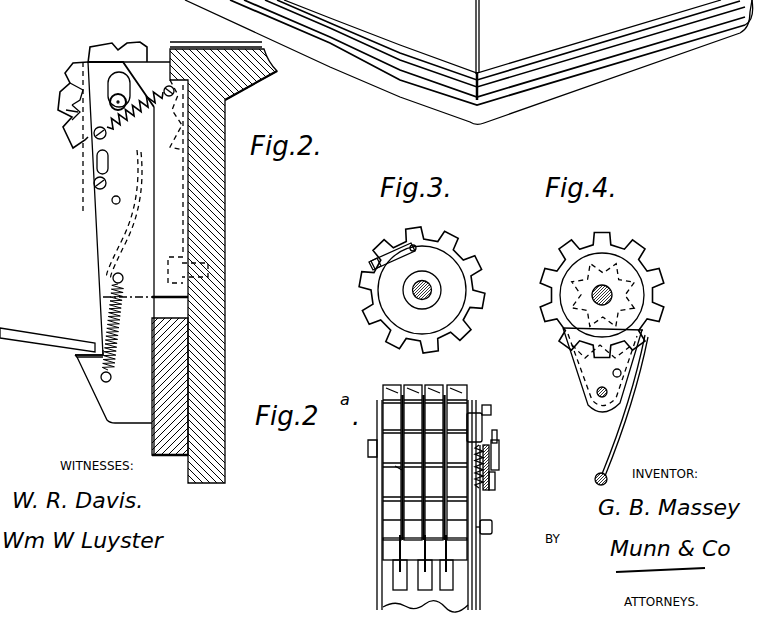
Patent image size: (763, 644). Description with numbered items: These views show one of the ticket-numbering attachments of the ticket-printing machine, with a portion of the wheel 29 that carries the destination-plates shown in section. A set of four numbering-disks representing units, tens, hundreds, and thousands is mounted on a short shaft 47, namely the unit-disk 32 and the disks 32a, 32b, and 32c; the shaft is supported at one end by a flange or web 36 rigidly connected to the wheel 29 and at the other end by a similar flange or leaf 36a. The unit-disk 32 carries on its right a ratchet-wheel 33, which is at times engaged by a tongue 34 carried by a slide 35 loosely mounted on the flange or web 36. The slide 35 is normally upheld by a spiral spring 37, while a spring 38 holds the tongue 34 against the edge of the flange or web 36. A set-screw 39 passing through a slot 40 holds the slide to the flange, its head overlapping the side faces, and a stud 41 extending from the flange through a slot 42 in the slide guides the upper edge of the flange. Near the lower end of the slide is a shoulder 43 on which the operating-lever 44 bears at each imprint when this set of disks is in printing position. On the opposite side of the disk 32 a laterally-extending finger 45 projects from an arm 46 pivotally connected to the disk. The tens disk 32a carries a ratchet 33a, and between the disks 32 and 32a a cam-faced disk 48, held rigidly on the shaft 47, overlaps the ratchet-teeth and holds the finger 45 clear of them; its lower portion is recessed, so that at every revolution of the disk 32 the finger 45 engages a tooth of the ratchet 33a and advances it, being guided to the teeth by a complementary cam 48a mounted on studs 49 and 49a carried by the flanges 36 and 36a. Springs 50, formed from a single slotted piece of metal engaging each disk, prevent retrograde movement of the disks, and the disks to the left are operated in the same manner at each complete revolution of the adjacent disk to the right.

In FIG. 2, the wheel 29 is at (222, 243).
In FIG. 2, the unit-disk 32 is at (135, 52).
In FIG. 3, the unit-disk 32 is at (470, 262).
In FIG. 2A, the unit-disk 32 is at (463, 391).
In FIG. 4, the tens printing-disk 32a is at (622, 246).
In FIG. 2A, the tens printing-disk 32a is at (437, 391).
In FIG. 2A, the numbering-disk 32b is at (414, 391).
In FIG. 2A, the numbering-disk 32c is at (393, 390).
In FIG. 2, the ratchet-wheel 33 is at (75, 108).
In FIG. 2A, the ratchet-wheel 33 is at (400, 469).
In FIG. 4, the ratchet 33a is at (602, 361).
In FIG. 2, the tongue 34 is at (80, 90).
In FIG. 2A, the tongue 34 is at (484, 428).
In FIG. 2, the slide 35 is at (143, 188).
In FIG. 2, the flange or web 36 is at (180, 270).
In FIG. 2A, the flange or web 36 is at (472, 563).
In FIG. 2A, the flange or leaf 36a is at (378, 546).
In FIG. 2, the spiral spring 37 is at (113, 342).
In FIG. 2, the spring 38 is at (124, 110).
In FIG. 2A, the spring 38 is at (492, 466).
In FIG. 2, the set-screw 39 is at (113, 165).
In FIG. 2A, the set-screw 39 is at (492, 528).
In FIG. 2, the slot 40 is at (97, 160).
In FIG. 2, the stud 41 is at (115, 100).
In FIG. 2, the slot 42 is at (130, 100).
In FIG. 2, the shoulder 43 is at (76, 357).
In FIG. 2, the operating-lever 44 is at (47, 335).
In FIG. 3, the finger 45 is at (413, 246).
In FIG. 3, the arm 46 is at (388, 261).
In FIG. 3, the short shaft 47 is at (410, 300).
In FIG. 4, the short shaft 47 is at (600, 290).
In FIG. 4, the cam-faced disk 48 is at (637, 280).
In FIG. 4, the cam 48a is at (575, 355).
In FIG. 2A, the cam 48a is at (405, 505).
In FIG. 4, the stud 49 is at (600, 394).
In FIG. 4, the stud 49a is at (621, 373).
In FIG. 4, the spring 50 is at (620, 424).
In FIG. 2A, the spring 50 is at (419, 598).